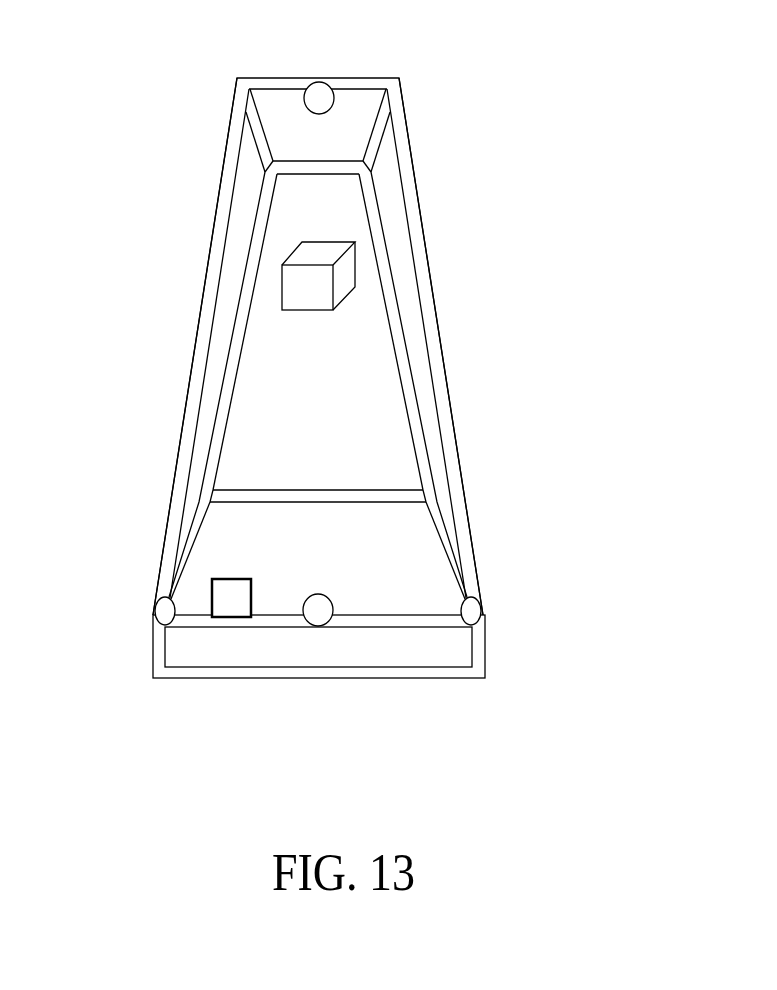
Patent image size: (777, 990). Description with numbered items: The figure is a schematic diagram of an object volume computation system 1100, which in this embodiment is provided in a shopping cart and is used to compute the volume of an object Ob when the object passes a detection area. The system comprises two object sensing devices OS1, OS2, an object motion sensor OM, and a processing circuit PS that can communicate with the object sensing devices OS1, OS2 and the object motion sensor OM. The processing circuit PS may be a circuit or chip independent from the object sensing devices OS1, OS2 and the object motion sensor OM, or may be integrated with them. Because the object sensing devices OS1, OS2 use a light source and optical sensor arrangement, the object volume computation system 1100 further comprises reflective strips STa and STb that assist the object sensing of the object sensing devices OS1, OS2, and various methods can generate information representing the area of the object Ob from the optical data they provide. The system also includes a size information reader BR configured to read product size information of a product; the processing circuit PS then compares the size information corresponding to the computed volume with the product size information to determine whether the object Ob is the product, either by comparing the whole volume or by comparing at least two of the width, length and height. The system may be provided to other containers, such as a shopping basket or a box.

The object volume computation system 1100 is at (321, 363).
The object motion sensor OM is at (318, 93).
The reflective strip STb is at (213, 282).
The reflective strip STa is at (432, 312).
The object Ob is at (347, 273).
The object sensing device OS1 is at (167, 611).
The object sensing device OS2 is at (478, 603).
The processing circuit PS is at (231, 598).
The size information reader BR is at (325, 613).